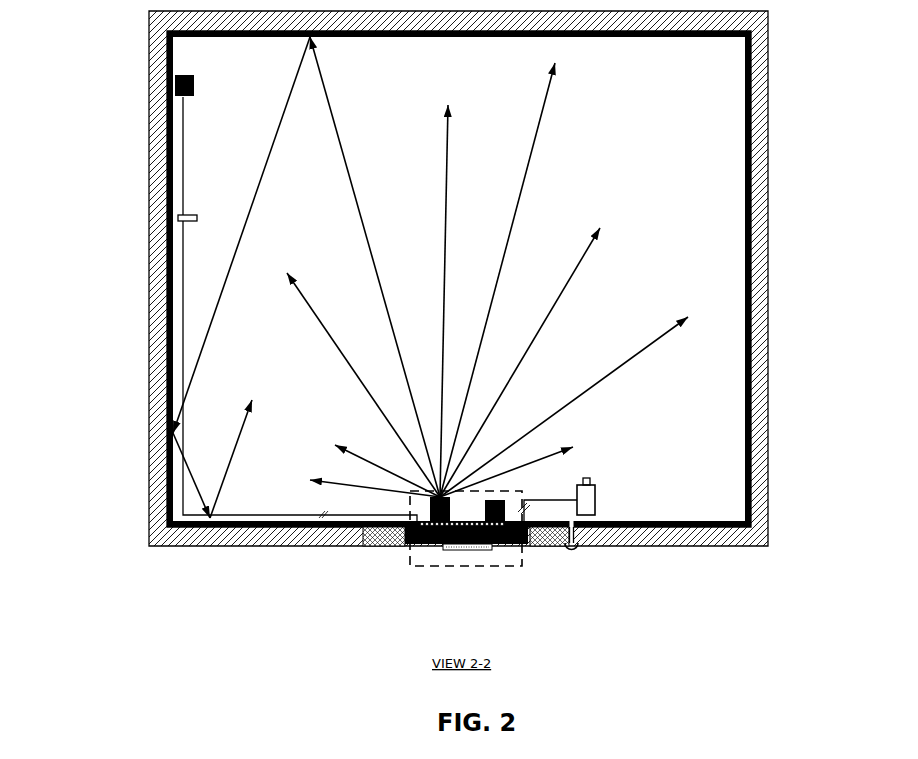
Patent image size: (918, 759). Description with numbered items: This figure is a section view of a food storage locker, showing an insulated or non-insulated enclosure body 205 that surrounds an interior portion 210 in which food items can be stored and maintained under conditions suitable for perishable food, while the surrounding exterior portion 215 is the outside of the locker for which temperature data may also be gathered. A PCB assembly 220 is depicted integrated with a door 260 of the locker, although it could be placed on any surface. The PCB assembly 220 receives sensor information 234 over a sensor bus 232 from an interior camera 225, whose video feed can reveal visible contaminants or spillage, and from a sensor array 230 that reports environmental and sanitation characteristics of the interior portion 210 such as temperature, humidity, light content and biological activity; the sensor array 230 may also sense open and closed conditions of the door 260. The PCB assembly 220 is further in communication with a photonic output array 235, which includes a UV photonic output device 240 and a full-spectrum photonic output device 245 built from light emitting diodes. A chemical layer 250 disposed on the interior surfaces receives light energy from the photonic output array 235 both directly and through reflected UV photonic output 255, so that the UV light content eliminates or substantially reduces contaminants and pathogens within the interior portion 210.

The enclosure body 205 is at (703, 546).
The interior portion 210 is at (485, 150).
The exterior portion 215 is at (409, 335).
The PCB assembly 220 is at (473, 566).
The interior camera 225 is at (590, 512).
The sensor array 230 is at (175, 78).
The sensor bus 232 is at (242, 517).
The sensor information 234 is at (180, 217).
The photonic output array 235 is at (476, 470).
The UV photonic output device 240 is at (440, 541).
The full-spectrum photonic output device 245 is at (503, 541).
The chemical layer 250 is at (667, 34).
The reflected UV photonic output 255 is at (245, 427).
The door 260 is at (392, 547).